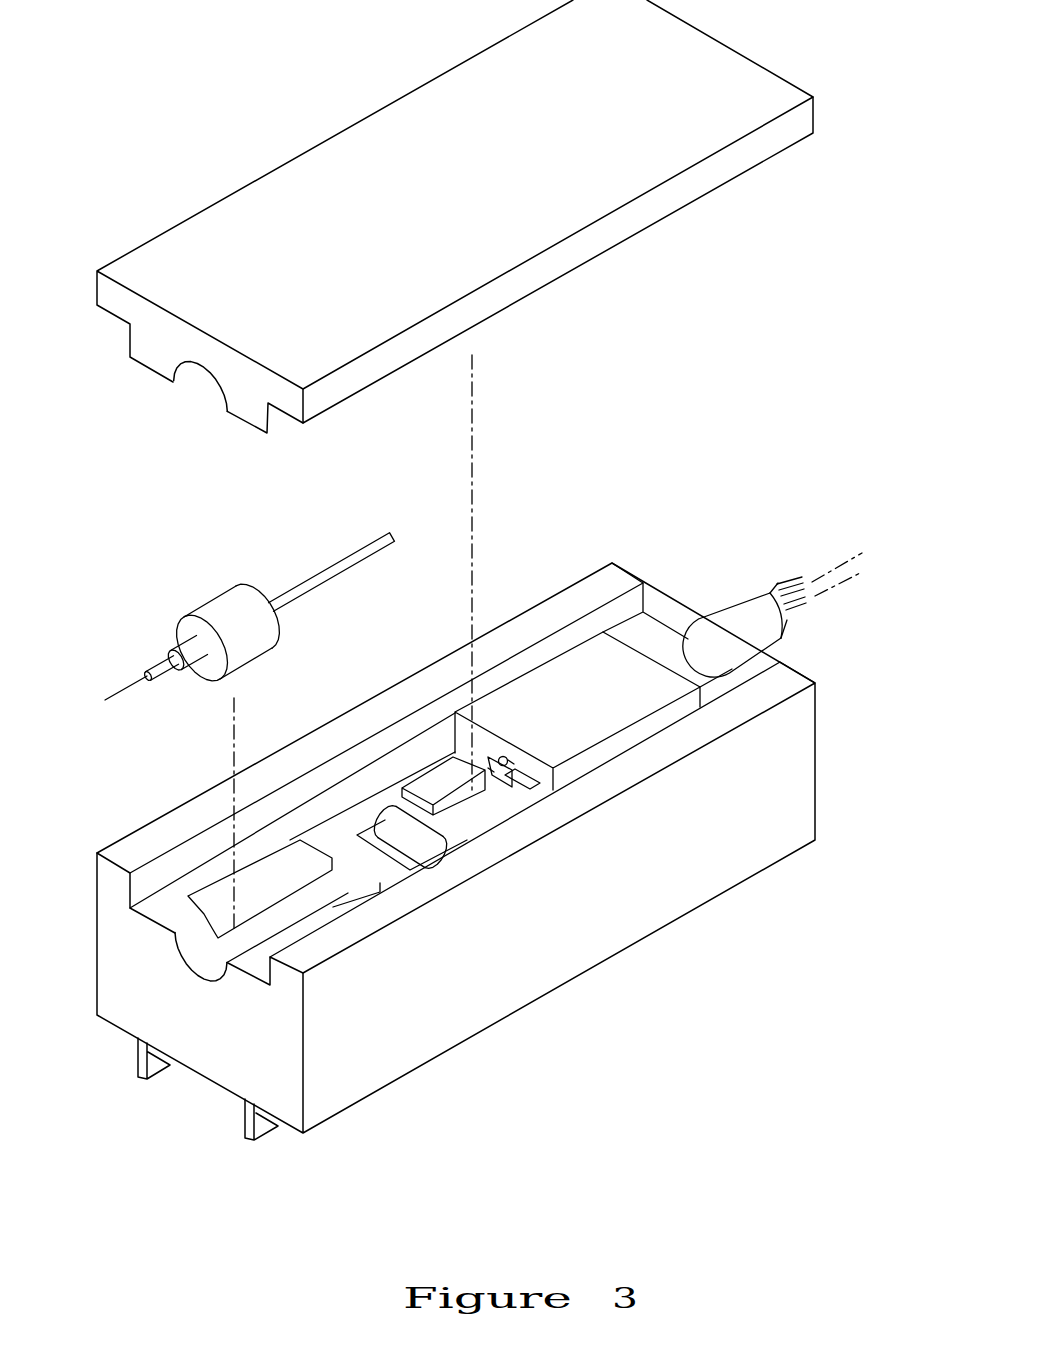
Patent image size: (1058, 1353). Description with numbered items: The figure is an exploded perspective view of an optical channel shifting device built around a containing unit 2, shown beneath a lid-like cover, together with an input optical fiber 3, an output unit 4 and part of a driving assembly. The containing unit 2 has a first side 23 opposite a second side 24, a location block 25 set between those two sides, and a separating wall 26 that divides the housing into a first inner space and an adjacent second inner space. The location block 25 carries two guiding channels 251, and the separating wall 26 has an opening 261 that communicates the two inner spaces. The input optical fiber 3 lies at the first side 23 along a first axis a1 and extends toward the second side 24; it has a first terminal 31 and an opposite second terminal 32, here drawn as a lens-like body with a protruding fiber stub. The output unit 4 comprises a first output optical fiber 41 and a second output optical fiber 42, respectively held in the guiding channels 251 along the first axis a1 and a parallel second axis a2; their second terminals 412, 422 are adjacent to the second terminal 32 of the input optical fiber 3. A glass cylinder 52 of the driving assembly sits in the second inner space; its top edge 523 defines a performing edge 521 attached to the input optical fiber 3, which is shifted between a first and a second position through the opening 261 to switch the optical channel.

The containing unit 2 is at (456, 823).
The first side 23 is at (290, 1058).
The second side 24 is at (640, 597).
The location block 25 is at (605, 658).
The separating wall 26 is at (337, 845).
The guiding channels 251 is at (545, 899).
The opening 261 is at (370, 830).
The input optical fiber 3 is at (270, 563).
The first terminal 31 is at (270, 603).
The second terminal 32 is at (372, 543).
The output unit 4 is at (778, 589).
The first output optical fiber 41 is at (760, 630).
The second output optical fiber 42 is at (752, 604).
The second terminal 412 is at (530, 762).
The second terminal 422 is at (510, 766).
The cylinder 52 is at (420, 853).
The performing edge 521 is at (404, 818).
The top edge 523 is at (420, 853).
The first axis a1 is at (485, 634).
The second axis a2 is at (853, 554).